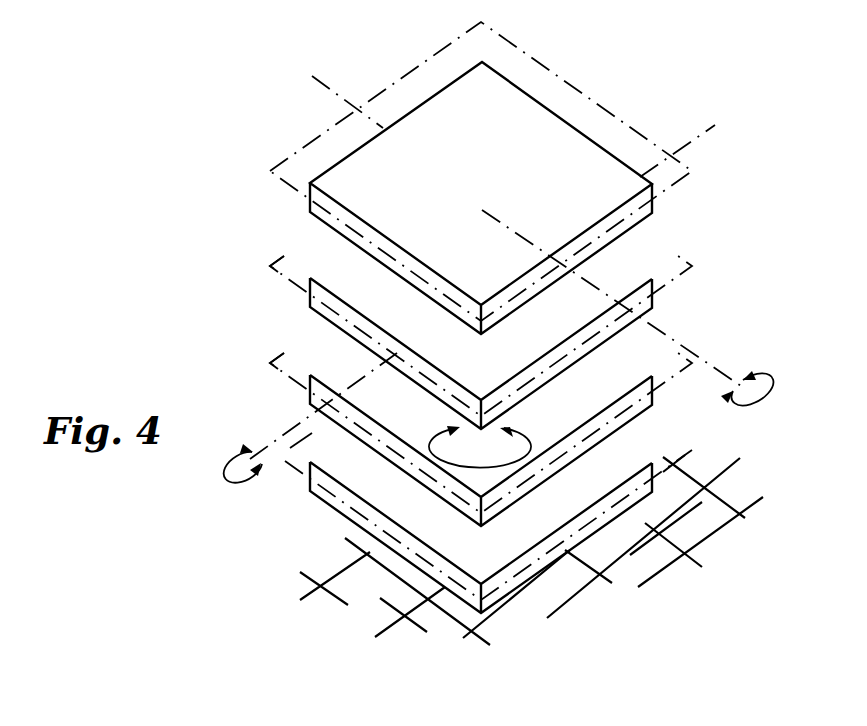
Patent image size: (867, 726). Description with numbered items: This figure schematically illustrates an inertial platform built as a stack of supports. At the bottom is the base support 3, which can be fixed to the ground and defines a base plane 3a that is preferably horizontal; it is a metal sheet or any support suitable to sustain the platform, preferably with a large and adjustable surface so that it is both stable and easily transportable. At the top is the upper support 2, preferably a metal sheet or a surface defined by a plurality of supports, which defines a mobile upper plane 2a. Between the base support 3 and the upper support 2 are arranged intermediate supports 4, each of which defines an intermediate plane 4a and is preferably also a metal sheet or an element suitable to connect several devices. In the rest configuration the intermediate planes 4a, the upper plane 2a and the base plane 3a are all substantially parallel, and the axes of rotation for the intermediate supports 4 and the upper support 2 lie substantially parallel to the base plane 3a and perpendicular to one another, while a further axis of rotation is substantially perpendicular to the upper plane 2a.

The upper support 2 is at (352, 178).
The upper plane 2a is at (592, 116).
The base support 3 is at (370, 474).
The base plane 3a is at (304, 438).
The intermediate support 4 is at (615, 286).
The intermediate plane 4a is at (278, 258).